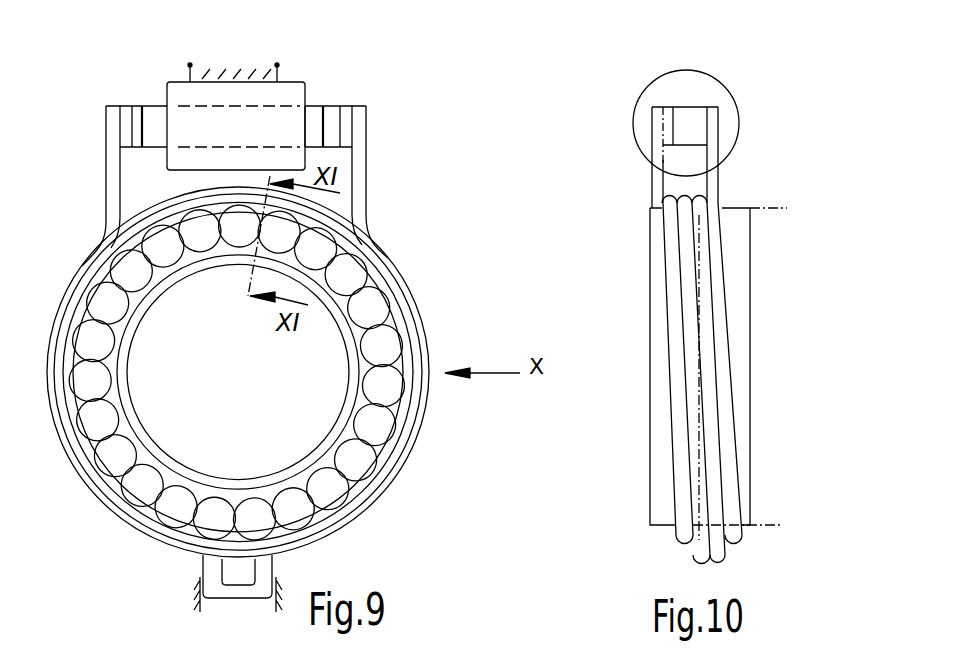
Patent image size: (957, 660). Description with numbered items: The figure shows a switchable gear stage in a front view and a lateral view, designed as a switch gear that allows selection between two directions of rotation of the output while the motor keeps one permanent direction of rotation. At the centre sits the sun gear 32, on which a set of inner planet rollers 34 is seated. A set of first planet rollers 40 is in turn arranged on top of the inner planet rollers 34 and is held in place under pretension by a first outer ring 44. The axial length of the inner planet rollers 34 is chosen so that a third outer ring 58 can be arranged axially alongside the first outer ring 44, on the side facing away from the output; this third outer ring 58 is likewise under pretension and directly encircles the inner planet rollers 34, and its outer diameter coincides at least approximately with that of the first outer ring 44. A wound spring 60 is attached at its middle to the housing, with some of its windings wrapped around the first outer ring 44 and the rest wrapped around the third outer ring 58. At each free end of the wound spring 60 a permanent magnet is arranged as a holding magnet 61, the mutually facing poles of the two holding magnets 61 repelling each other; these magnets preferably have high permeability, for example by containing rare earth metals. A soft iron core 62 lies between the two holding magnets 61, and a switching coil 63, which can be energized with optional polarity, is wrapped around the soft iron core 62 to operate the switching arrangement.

In FIG. 9, the sun gear 32 is at (355, 400).
In FIG. 9, the inner planet rollers 34 is at (345, 272).
In FIG. 9, the first planet rollers 40 is at (320, 242).
In FIG. 9, the first outer ring 44 is at (407, 322).
In FIG. 10, the first outer ring 44 is at (742, 448).
In FIG. 9, the third outer ring 58 is at (407, 347).
In FIG. 10, the third outer ring 58 is at (660, 425).
In FIG. 9, the wound spring 60 is at (354, 158).
In FIG. 10, the wound spring 60 is at (672, 253).
In FIG. 9, the holding magnets 61 is at (131, 124).
In FIG. 10, the holding magnets 61 is at (687, 125).
In FIG. 9, the soft iron core 62 is at (310, 122).
In FIG. 9, the switching coil 63 is at (232, 117).
In FIG. 10, the switching coil 63 is at (687, 93).